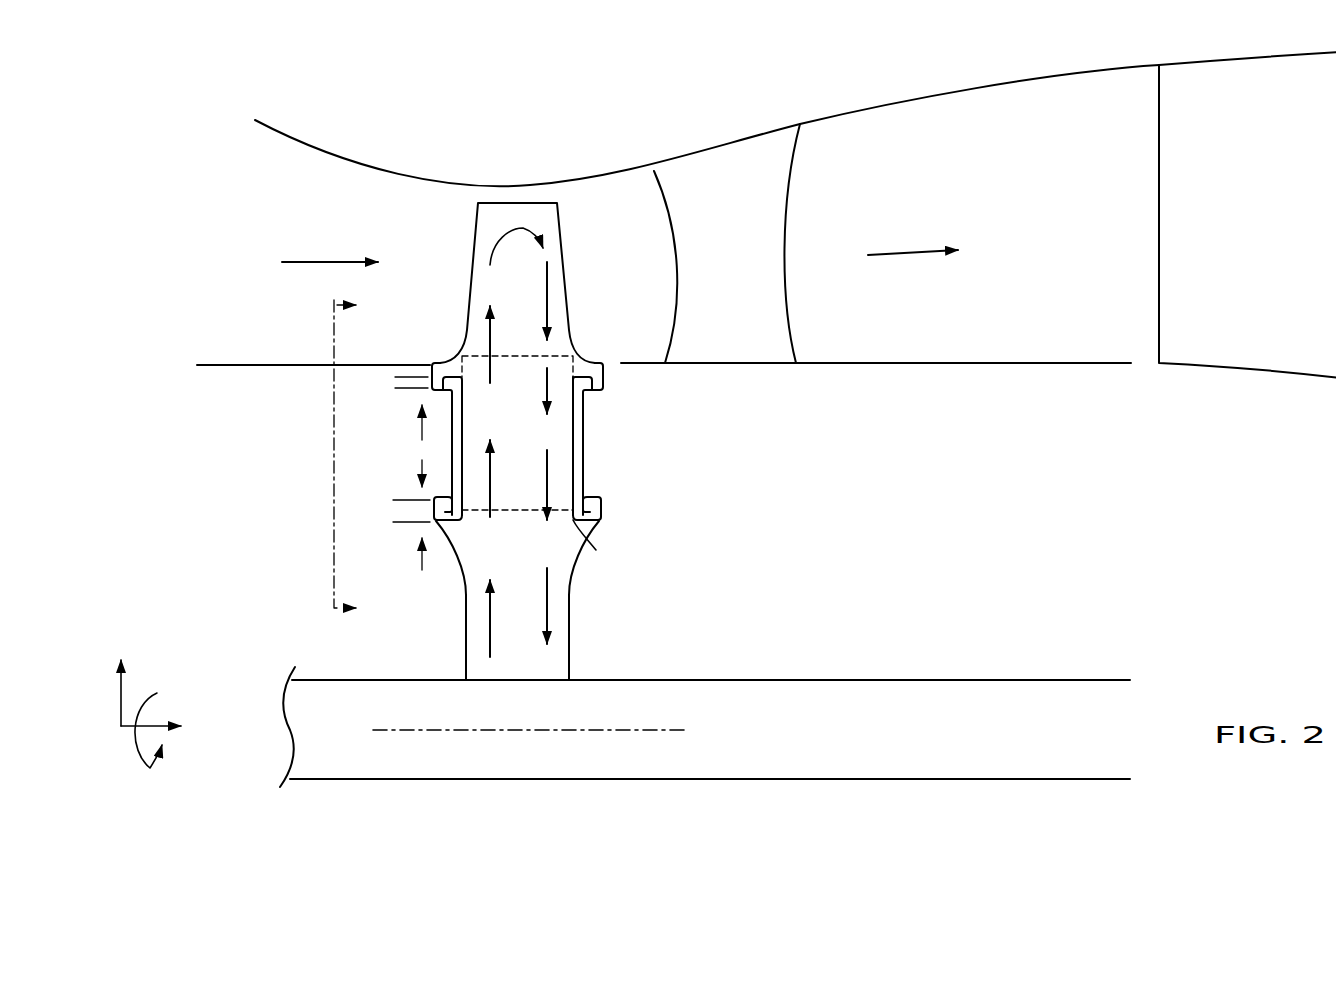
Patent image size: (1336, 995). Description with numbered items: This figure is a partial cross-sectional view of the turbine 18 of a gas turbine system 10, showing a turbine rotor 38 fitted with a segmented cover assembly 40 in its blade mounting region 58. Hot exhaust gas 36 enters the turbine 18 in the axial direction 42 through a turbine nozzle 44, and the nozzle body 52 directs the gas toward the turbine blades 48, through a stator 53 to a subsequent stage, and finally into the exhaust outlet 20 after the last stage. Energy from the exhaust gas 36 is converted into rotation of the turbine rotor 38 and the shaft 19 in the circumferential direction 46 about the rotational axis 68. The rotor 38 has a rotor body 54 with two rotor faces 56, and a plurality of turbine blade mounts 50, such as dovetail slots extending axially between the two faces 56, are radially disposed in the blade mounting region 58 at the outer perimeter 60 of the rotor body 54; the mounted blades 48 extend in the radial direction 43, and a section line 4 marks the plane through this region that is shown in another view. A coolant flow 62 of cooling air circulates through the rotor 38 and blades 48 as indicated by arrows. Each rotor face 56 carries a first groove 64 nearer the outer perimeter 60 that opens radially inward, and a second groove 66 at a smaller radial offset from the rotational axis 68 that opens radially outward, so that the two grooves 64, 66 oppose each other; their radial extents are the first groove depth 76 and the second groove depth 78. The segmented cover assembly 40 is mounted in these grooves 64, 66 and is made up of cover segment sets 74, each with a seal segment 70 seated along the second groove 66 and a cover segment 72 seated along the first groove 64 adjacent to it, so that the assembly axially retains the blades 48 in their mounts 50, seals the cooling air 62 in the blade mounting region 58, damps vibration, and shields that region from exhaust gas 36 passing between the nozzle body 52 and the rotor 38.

The gas turbine system 10 is at (712, 108).
The turbine 18 is at (856, 164).
The shaft 19 is at (707, 781).
The exhaust outlet 20 is at (1258, 232).
The hot exhaust gas 36 is at (327, 260).
The turbine rotor 38 is at (462, 522).
The segmented cover assembly 40 is at (396, 450).
The axial direction 42 is at (160, 723).
The radial direction 43 is at (120, 693).
The turbine nozzle 44 is at (413, 235).
The circumferential direction 46 is at (150, 768).
The turbine blade 48 is at (563, 276).
The turbine blade mount 50 is at (517, 512).
The nozzle body 52 is at (384, 168).
The stator 53 is at (717, 203).
The rotor body 54 is at (503, 673).
The rotor face 56 is at (466, 597).
The blade mounting region 58 is at (567, 376).
The outer perimeter 60 is at (449, 360).
The coolant flow 62 is at (523, 228).
The first groove 64 is at (593, 362).
The second groove 66 is at (596, 550).
The rotational axis 68 is at (528, 733).
The seal segment 70 is at (470, 562).
The cover segment 72 is at (450, 398).
The cover segment set 74 is at (673, 454).
The first groove depth 76 is at (421, 364).
The second groove depth 78 is at (421, 555).
The section line 4- 4 is at (349, 460).